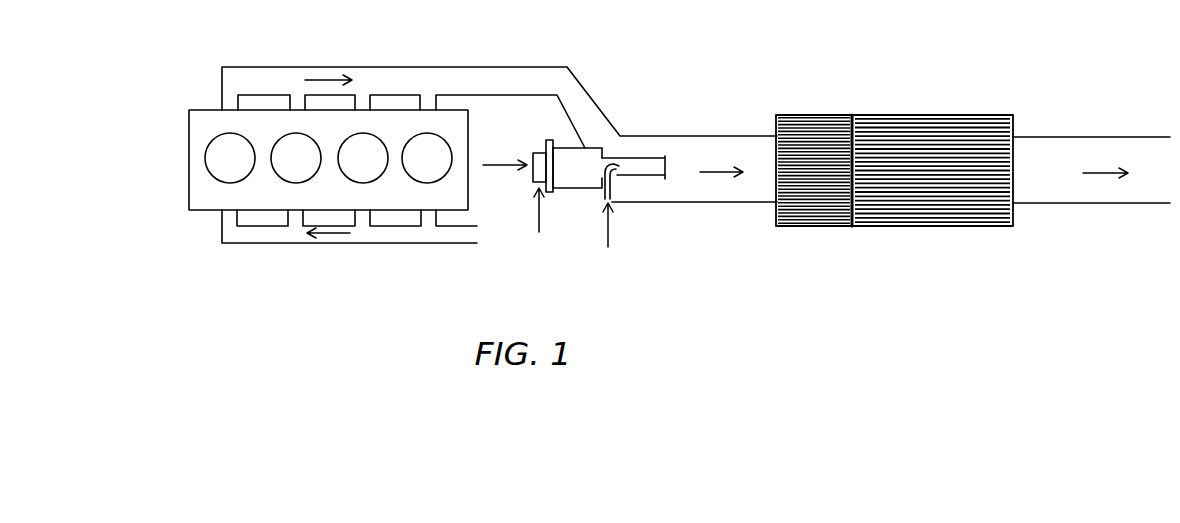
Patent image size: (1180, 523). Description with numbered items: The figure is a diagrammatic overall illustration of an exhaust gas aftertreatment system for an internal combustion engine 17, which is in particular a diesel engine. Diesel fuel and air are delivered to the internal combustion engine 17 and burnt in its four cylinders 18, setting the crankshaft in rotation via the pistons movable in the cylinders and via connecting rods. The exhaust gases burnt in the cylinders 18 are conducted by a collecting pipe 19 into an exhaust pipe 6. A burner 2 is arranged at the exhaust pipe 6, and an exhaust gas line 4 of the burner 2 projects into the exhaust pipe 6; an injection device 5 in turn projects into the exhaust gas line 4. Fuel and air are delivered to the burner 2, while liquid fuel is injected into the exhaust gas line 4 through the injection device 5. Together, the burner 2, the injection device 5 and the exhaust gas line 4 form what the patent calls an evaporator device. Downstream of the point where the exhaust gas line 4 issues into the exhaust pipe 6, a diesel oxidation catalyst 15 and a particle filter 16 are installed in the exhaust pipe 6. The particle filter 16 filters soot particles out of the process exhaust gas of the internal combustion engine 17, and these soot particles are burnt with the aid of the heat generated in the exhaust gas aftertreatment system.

The burner 2 is at (573, 177).
The exhaust gas line 4 is at (637, 160).
The injection device 5 is at (616, 191).
The exhaust pipe 6 is at (710, 145).
The diesel oxidation catalyst 15 is at (782, 120).
The particle filter 16 is at (890, 130).
The internal combustion engine 17 is at (223, 200).
The cylinders 18 is at (357, 171).
The collecting pipe 19 is at (385, 73).